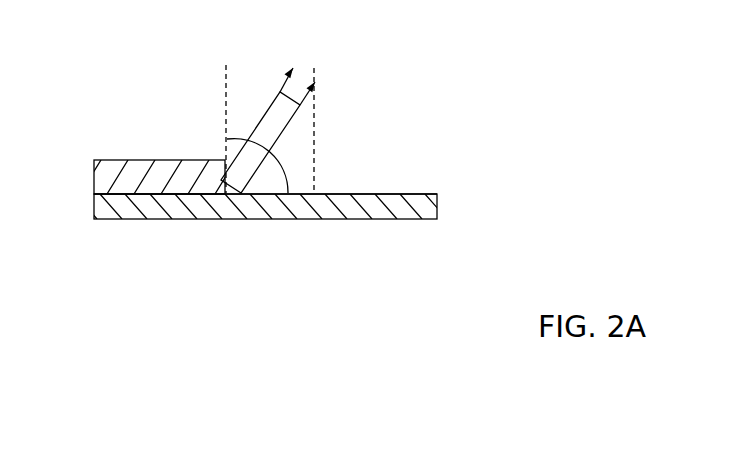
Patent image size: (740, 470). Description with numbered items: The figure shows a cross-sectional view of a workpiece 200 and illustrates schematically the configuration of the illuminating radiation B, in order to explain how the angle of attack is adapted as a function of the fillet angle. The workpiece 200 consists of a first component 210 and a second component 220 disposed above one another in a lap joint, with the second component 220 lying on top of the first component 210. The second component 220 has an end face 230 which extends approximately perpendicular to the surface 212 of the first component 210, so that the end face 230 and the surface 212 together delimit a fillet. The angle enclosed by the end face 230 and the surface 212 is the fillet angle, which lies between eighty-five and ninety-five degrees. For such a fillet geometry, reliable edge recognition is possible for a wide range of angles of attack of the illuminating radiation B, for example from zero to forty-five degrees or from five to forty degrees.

The workpiece 200 is at (505, 122).
The first component 210 is at (432, 217).
The surface of the first component 212 is at (397, 194).
The second component 220 is at (100, 162).
The end face 230 is at (219, 185).
The illuminating radiation B is at (290, 99).